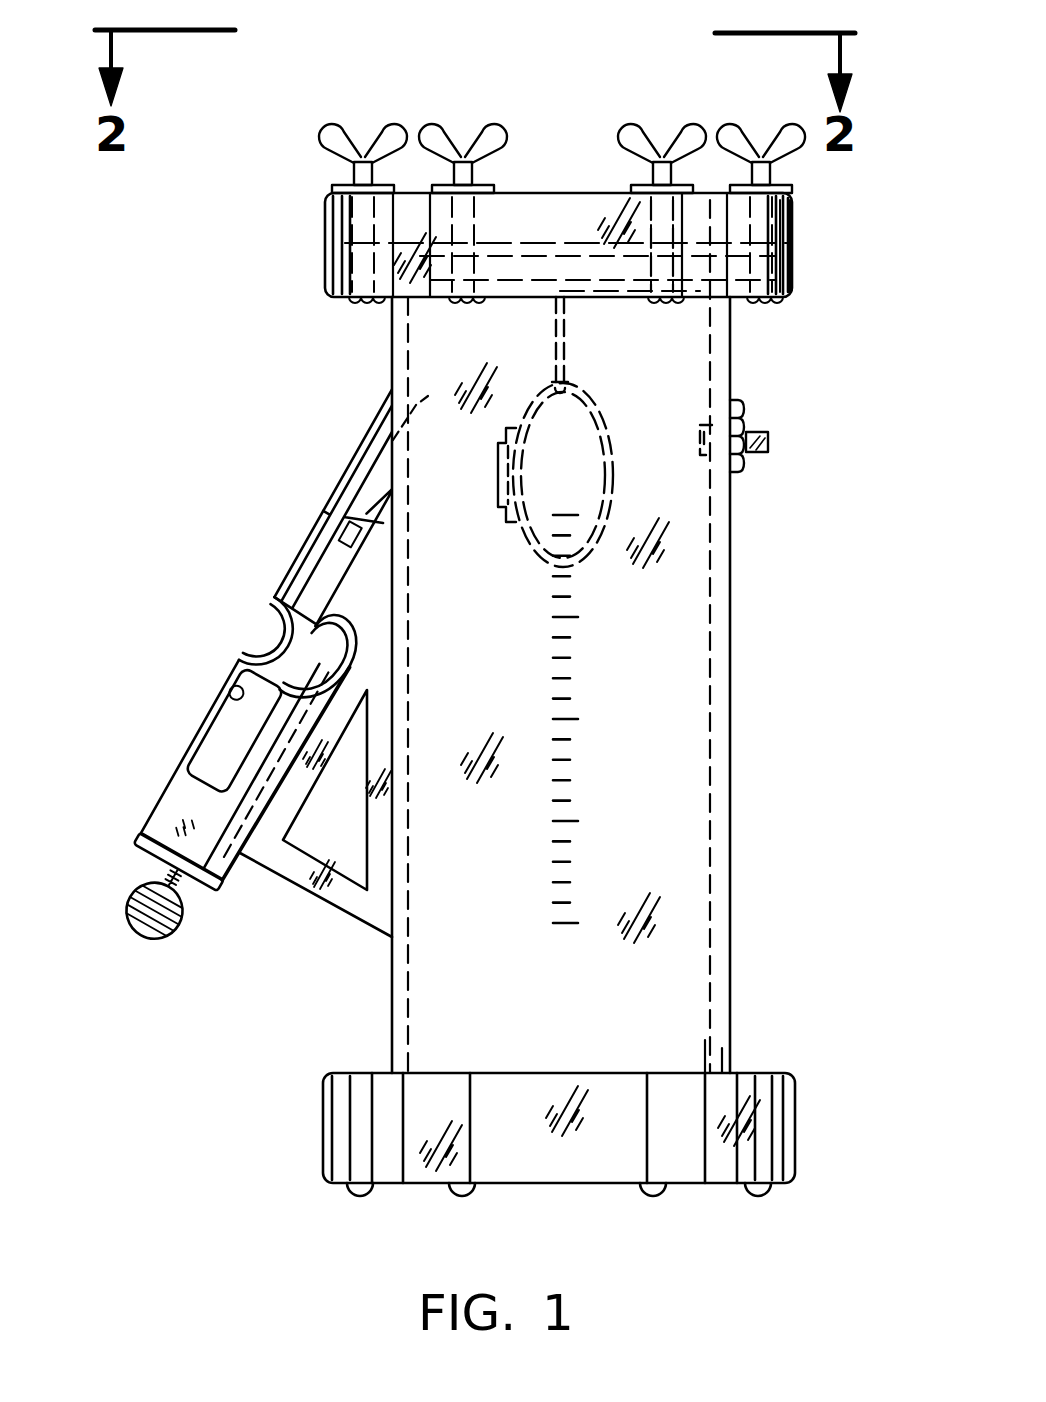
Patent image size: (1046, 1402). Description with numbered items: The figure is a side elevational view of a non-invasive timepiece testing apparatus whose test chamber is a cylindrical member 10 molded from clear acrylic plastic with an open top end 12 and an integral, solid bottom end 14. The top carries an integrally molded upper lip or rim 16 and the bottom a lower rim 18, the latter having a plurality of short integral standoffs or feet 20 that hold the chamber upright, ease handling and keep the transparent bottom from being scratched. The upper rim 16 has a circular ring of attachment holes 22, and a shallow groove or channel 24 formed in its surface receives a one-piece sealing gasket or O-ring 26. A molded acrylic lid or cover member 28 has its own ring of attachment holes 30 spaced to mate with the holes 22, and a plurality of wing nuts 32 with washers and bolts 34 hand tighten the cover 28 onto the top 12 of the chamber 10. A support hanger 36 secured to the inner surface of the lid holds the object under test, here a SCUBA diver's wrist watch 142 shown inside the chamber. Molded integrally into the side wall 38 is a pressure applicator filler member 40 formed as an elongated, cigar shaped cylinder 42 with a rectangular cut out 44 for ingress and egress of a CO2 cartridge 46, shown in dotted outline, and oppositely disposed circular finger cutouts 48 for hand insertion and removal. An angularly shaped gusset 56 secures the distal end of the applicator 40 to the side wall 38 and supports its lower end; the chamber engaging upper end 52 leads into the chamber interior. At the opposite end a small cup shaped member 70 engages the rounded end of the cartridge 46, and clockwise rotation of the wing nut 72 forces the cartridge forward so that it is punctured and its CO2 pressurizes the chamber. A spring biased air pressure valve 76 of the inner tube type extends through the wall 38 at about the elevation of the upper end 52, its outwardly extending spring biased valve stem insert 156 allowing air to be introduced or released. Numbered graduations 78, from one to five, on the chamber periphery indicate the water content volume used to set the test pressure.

The cylindrical member 10 is at (477, 660).
The open top end 12 is at (570, 212).
The integral bottom end 14 is at (696, 1092).
The upper lip or rim 16 is at (795, 290).
The lower or bottom rim 18 is at (607, 1109).
The standoffs or feet 20 is at (462, 1196).
The attachment holes 22 is at (340, 190).
The groove or channel 24 is at (492, 240).
The sealing gasket or O-ring 26 is at (560, 270).
The lid or cover member 28 is at (815, 249).
The attachment holes 30 is at (800, 218).
The wing nuts 32 is at (632, 135).
The bolts 34 is at (700, 235).
The support hanger 36 is at (565, 322).
The side wall 38 is at (392, 358).
The pressure applicator filler member 40 is at (266, 682).
The cigar shaped cylinder 42 is at (362, 501).
The rectangular cut out 44 is at (255, 733).
The CO2 cartridge 46 is at (234, 730).
The finger cutouts 48 is at (302, 648).
The upper end 52 is at (341, 486).
The gusset 56 is at (366, 905).
The cup shaped member 70 is at (188, 846).
The wing nut 72 is at (159, 902).
The air pressure valve 76 is at (805, 481).
The numbered graduations 78 is at (553, 660).
The wrist watch 142 is at (520, 440).
The valve stem insert 156 is at (768, 455).